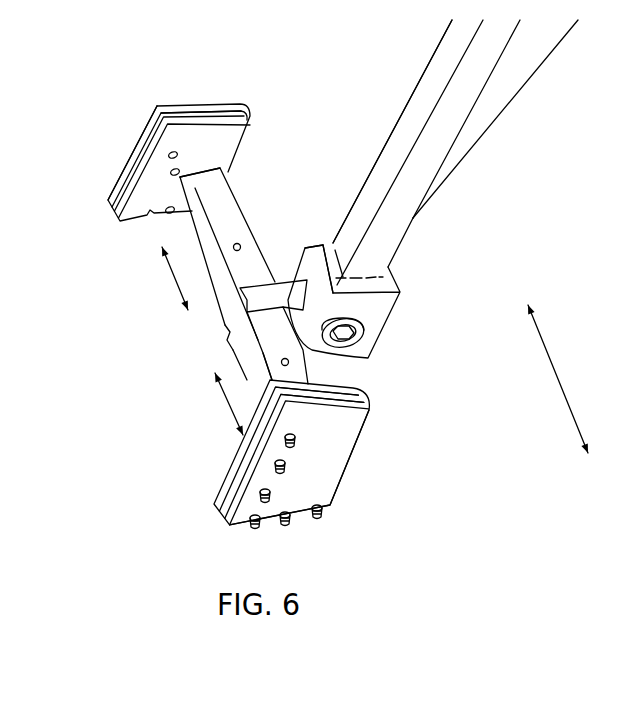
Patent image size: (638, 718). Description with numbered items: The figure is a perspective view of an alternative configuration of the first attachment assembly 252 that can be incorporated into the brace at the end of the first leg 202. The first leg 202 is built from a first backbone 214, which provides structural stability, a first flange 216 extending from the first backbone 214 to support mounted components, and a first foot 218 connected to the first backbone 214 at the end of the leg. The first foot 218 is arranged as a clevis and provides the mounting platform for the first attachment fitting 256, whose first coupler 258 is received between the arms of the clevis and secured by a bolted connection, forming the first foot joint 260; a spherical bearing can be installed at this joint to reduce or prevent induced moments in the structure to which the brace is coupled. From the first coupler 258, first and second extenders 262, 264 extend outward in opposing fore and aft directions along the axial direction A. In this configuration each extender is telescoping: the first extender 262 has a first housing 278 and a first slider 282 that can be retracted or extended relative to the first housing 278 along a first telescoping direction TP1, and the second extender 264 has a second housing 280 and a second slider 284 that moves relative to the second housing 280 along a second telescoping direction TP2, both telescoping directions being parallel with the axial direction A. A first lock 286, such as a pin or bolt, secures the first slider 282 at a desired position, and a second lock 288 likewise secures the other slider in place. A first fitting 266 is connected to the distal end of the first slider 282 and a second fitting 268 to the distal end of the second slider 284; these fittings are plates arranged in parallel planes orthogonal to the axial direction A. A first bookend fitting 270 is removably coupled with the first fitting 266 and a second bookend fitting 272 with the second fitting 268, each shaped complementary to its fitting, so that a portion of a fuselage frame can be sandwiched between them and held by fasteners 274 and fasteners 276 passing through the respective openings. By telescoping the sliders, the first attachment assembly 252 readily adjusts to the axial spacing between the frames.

The first leg 202 is at (390, 125).
The first backbone 214 is at (435, 67).
The first flange 216 is at (475, 123).
The first foot 218 is at (373, 307).
The first attachment assembly 252 is at (137, 108).
The first attachment fitting 256 is at (178, 321).
The first coupler 258 is at (273, 282).
The first foot joint 260 is at (372, 338).
The first extender 262 is at (232, 358).
The second extender 264 is at (252, 212).
The first fitting 266 is at (233, 476).
The second fitting 268 is at (238, 137).
The first bookend fitting 270 is at (342, 443).
The second bookend fitting 272 is at (205, 108).
The fasteners 274 is at (322, 509).
The fasteners 276 is at (165, 153).
The first housing 278 is at (255, 367).
The second housing 280 is at (265, 257).
The first slider 282 is at (300, 383).
The second slider 284 is at (217, 203).
The first lock 286 is at (292, 362).
The second lock 288 is at (233, 246).
The first telescoping direction TP1 is at (157, 278).
The second telescoping direction TP2 is at (215, 404).
The axial direction A is at (558, 379).